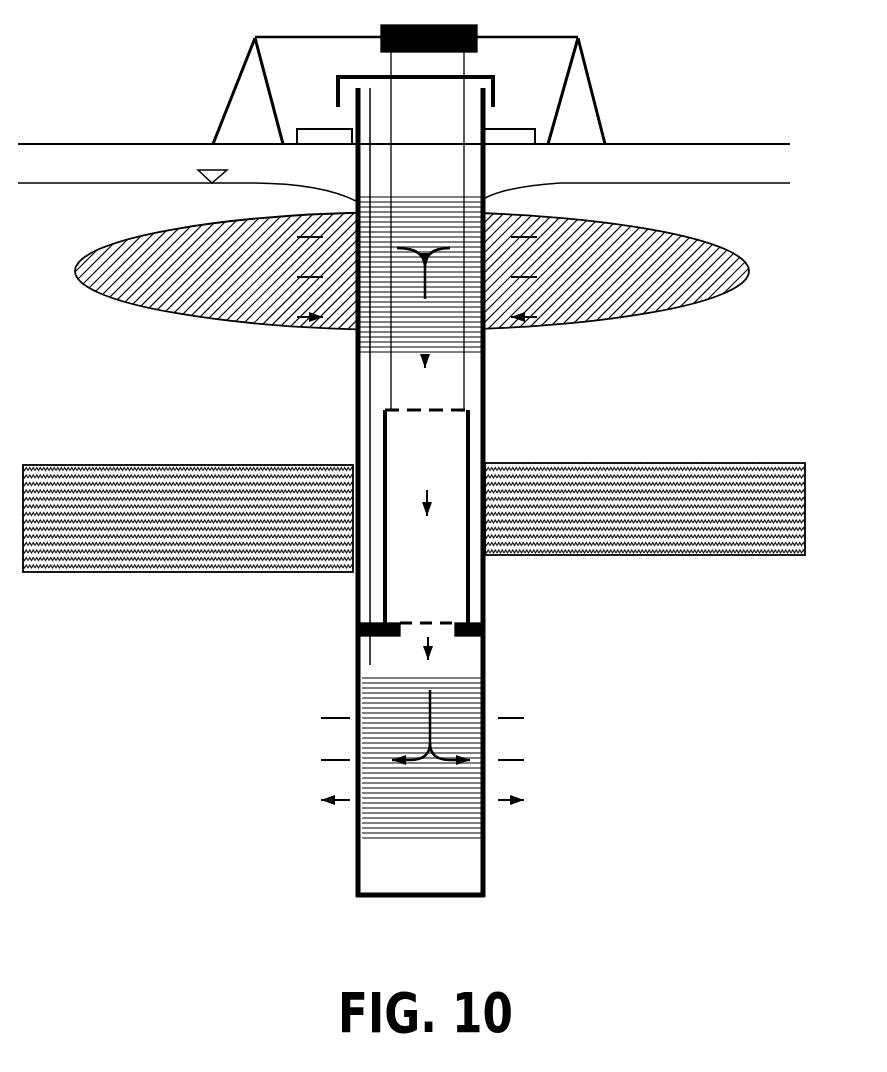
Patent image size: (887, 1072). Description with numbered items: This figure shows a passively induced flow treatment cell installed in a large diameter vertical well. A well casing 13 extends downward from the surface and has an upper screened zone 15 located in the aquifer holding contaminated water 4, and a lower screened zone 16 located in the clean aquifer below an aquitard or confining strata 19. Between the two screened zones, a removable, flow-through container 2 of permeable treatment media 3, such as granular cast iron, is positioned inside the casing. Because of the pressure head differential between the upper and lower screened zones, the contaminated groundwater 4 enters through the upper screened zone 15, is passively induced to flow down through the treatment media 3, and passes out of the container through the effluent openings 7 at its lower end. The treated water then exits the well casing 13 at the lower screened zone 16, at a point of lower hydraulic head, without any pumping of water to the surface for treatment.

The container 2 is at (471, 460).
The treatment media 3 is at (434, 445).
The water 4 is at (432, 270).
The effluent openings 7 is at (403, 637).
The well casing 13 is at (489, 601).
The upper screened zone 15 is at (463, 203).
The lower screened zone 16 is at (452, 818).
The aquitard or confining strata 19 is at (414, 517).